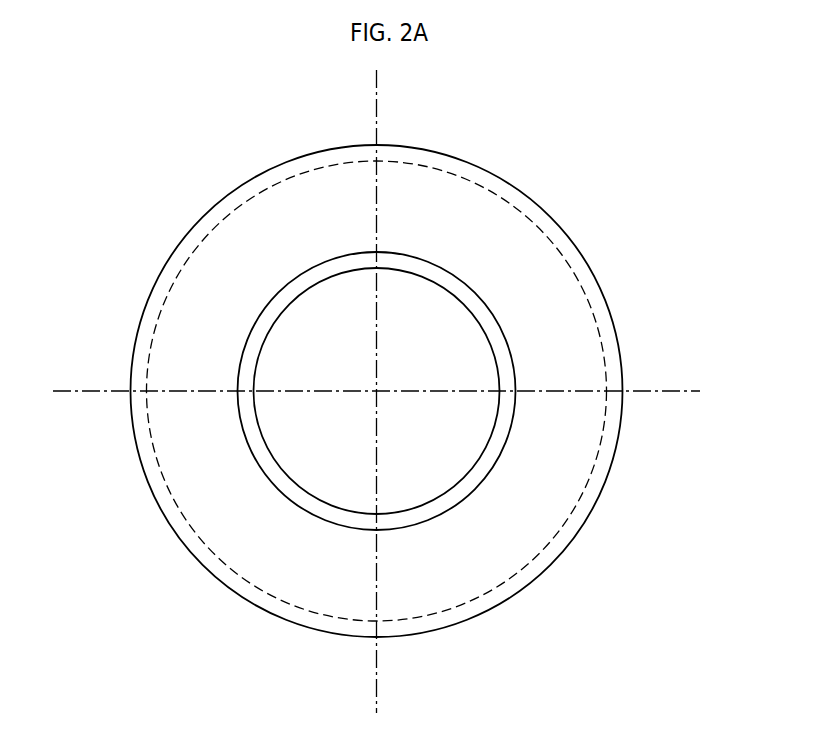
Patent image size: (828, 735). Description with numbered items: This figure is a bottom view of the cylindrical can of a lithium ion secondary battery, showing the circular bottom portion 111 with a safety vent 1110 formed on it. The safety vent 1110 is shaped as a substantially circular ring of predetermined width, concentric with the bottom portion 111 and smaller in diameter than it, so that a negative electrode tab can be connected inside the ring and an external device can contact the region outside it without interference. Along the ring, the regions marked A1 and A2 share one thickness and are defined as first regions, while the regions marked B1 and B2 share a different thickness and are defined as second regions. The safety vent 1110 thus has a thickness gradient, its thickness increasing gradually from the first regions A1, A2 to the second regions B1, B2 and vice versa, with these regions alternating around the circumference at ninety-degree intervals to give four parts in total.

The bottom portion 111 is at (612, 290).
The safety vent 1110 is at (445, 254).
The first region A1 is at (402, 235).
The first region A2 is at (401, 552).
The second region B1 is at (534, 377).
The second region B2 is at (219, 377).